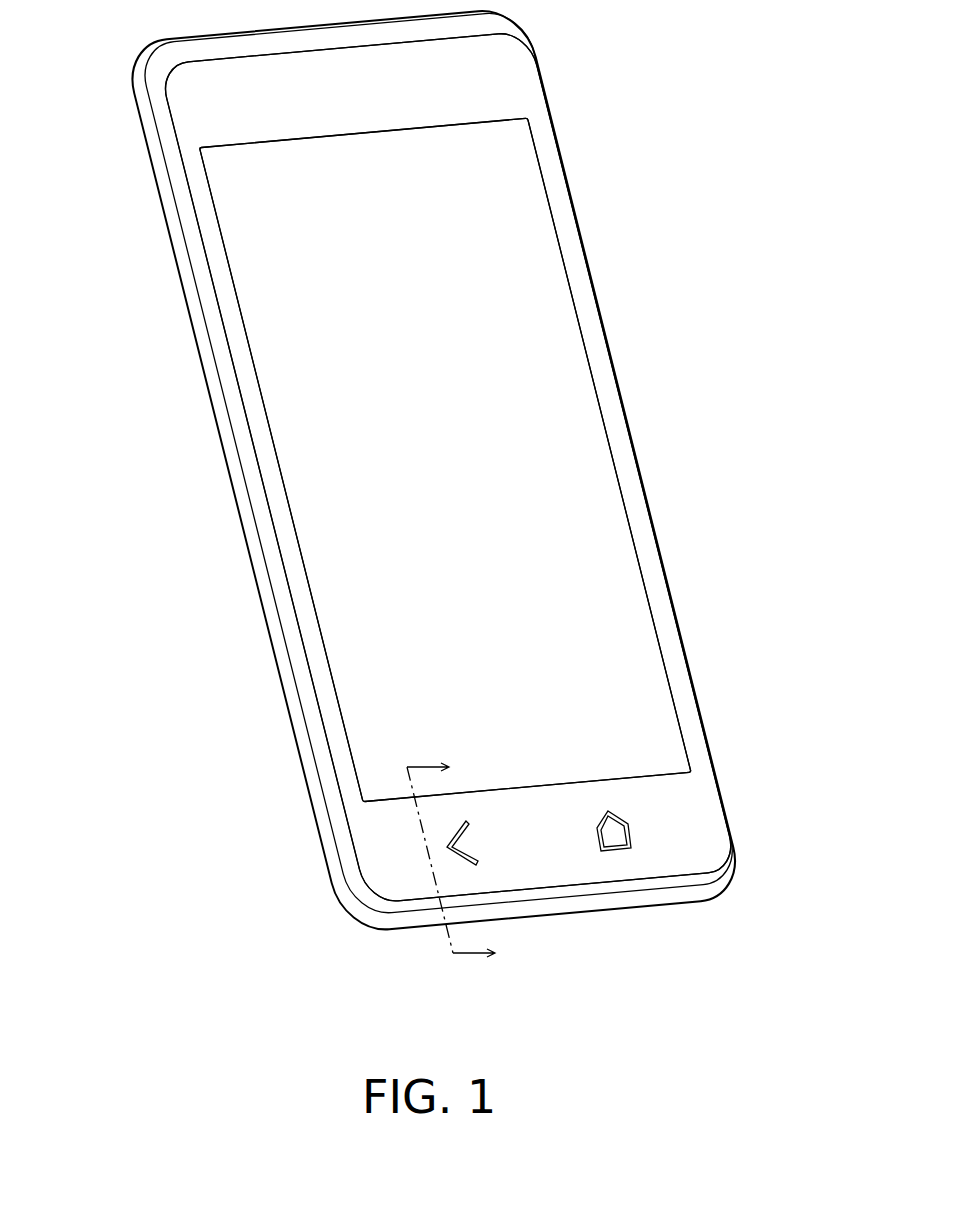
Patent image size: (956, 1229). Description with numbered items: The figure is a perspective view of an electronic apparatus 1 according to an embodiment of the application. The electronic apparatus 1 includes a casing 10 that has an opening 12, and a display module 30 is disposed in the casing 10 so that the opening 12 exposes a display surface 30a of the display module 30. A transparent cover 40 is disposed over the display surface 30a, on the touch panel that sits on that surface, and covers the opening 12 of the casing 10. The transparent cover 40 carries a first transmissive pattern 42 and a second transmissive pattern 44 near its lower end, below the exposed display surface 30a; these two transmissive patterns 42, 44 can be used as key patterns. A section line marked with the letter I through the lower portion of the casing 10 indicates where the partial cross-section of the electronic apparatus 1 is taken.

The electronic apparatus 1 is at (798, 997).
The casing 10 is at (312, 758).
The opening 12 is at (490, 107).
The display module 30 is at (292, 352).
The display surface 30a is at (275, 291).
The transparent cover 40 is at (205, 217).
The first transmissive pattern 42 is at (479, 861).
The second transmissive pattern 44 is at (632, 836).